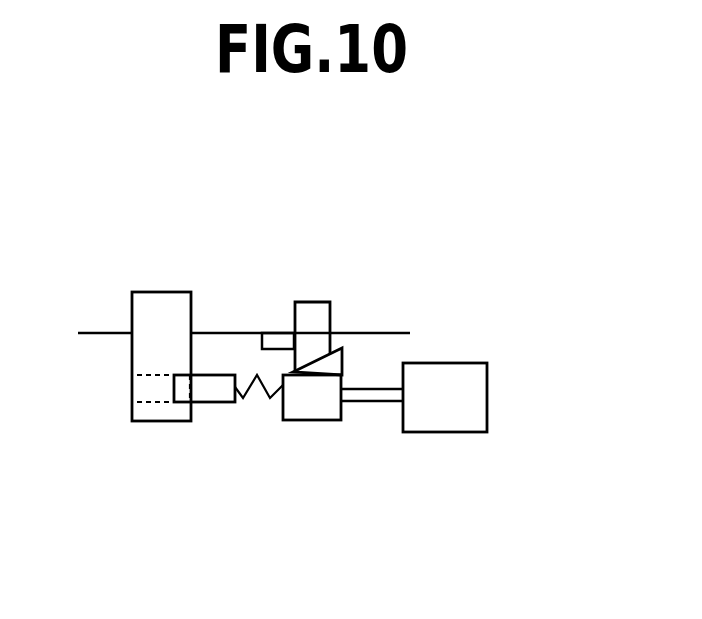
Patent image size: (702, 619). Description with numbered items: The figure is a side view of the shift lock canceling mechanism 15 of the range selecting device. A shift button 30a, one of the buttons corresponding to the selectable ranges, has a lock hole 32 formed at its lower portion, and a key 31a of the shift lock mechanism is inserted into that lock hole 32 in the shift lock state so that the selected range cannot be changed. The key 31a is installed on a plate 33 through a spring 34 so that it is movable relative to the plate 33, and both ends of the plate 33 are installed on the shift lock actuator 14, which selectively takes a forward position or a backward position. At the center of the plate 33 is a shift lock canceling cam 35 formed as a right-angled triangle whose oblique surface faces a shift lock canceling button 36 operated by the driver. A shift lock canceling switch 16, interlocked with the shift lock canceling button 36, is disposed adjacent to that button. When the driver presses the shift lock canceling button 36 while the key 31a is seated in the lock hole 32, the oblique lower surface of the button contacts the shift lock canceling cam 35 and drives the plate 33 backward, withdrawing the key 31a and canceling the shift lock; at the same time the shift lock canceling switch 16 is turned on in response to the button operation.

The shift lock actuator 14 is at (487, 397).
The shift lock canceling mechanism 15 is at (362, 305).
The shift lock canceling switch 16 is at (275, 333).
The shift button 30a is at (160, 292).
The key 31a is at (208, 403).
The lock hole 32 is at (137, 390).
The plate 33 is at (317, 420).
The spring 34 is at (253, 397).
The shift lock canceling cam 35 is at (345, 363).
The shift lock canceling button 36 is at (312, 302).